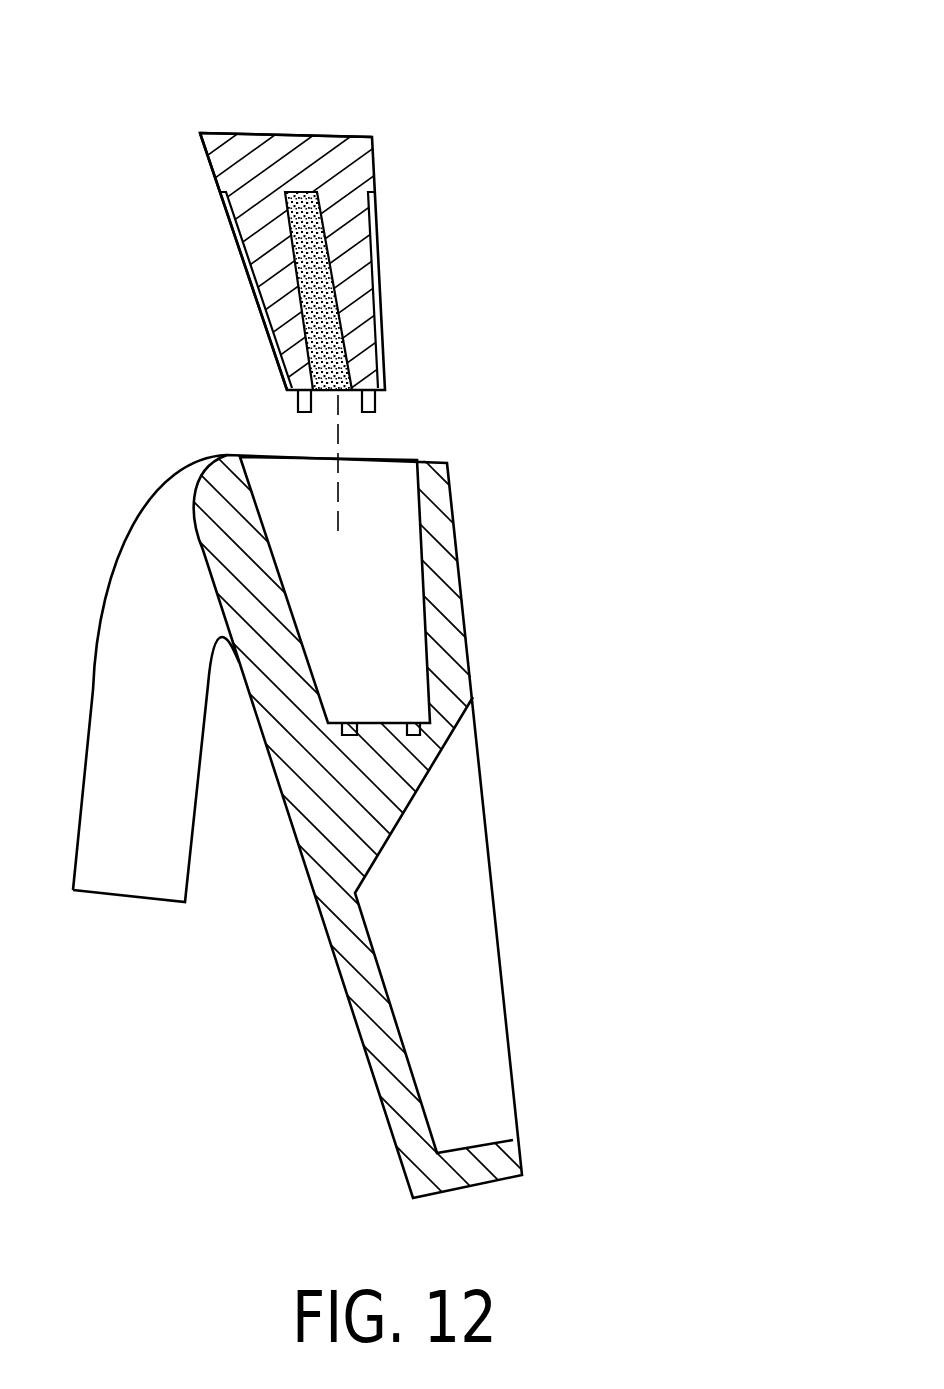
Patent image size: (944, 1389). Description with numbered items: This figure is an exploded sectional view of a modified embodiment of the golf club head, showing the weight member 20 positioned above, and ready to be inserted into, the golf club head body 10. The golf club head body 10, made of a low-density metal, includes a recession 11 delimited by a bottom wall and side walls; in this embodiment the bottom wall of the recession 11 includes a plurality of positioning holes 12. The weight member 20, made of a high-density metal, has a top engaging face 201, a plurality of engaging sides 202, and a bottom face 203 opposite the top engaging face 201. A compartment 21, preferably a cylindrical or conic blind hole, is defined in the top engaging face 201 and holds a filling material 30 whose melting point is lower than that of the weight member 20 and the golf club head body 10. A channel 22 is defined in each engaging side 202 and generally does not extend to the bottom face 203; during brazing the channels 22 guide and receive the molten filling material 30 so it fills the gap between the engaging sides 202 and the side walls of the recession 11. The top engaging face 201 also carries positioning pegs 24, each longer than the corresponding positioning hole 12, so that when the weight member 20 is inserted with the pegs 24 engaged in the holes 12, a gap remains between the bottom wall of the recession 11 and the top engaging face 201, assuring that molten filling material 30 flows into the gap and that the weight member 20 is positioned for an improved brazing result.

The golf club head body 10 is at (452, 670).
The recession 11 is at (382, 610).
The positioning holes 12 is at (420, 724).
The weight member 20 is at (398, 222).
The compartment 21 is at (342, 297).
The channel 22 is at (378, 262).
The positioning pegs 24 is at (297, 402).
The filling material 30 is at (347, 347).
The top engaging face 201 is at (377, 398).
The engaging sides 202 is at (212, 165).
The bottom face 203 is at (263, 133).